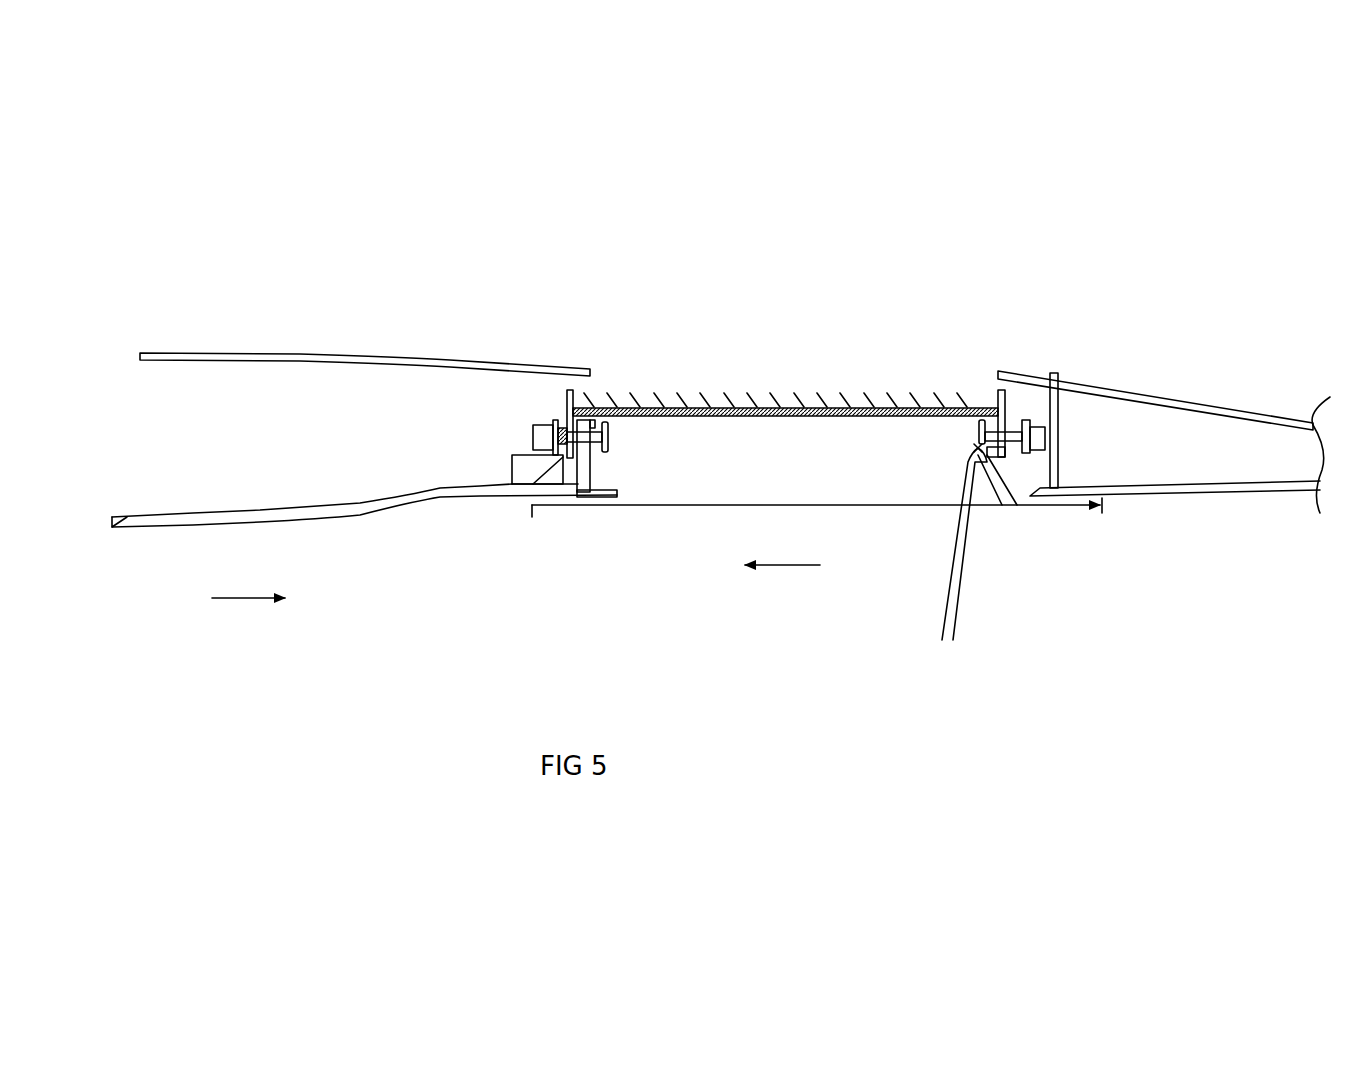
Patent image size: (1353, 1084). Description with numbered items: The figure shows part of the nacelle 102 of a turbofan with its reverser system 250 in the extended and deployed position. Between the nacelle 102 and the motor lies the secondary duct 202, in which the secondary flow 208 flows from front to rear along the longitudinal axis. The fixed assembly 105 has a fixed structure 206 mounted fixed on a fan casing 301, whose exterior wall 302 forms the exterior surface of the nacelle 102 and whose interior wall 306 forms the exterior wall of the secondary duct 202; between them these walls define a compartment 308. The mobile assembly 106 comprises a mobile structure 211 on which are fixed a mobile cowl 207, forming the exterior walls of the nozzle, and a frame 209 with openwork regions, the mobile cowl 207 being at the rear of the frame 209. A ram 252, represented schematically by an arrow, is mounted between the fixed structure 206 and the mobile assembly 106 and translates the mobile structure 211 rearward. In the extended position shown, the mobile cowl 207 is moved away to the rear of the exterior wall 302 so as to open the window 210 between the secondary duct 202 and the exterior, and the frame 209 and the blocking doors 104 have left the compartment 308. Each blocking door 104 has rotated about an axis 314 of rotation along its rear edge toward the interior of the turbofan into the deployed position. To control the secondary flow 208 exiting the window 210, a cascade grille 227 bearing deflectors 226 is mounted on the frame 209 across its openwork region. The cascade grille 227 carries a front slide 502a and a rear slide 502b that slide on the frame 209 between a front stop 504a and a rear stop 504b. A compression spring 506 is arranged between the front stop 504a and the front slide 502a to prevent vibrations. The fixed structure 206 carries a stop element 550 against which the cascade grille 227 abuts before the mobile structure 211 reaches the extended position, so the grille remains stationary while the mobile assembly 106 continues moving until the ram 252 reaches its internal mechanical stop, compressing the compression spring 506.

The nacelle 102 is at (1160, 304).
The blocking door 104 is at (953, 632).
The fixed assembly 105 is at (182, 329).
The mobile assembly 106 is at (1218, 339).
The secondary duct 202 is at (806, 553).
The fixed structure 206 is at (112, 527).
The mobile cowl 207 is at (1242, 402).
The secondary flow 208 is at (248, 618).
The frame 209 is at (537, 431).
The window 210 is at (840, 312).
The mobile structure 211 is at (512, 477).
The deflectors 226 is at (627, 393).
The cascade grille 227 is at (735, 397).
The reverser system 250 is at (460, 551).
The ram 252 is at (665, 505).
The fan casing 301 is at (457, 319).
The exterior wall 302 is at (365, 354).
The interior wall 306 is at (195, 527).
The compartment 308 is at (232, 497).
The axis of rotation 314 is at (1002, 505).
The front slide 502a is at (575, 455).
The rear slide 502b is at (985, 458).
The front stop 504a is at (1010, 407).
The rear stop 504b is at (1030, 428).
The compression spring 506 is at (527, 489).
The stop element 550 is at (588, 470).